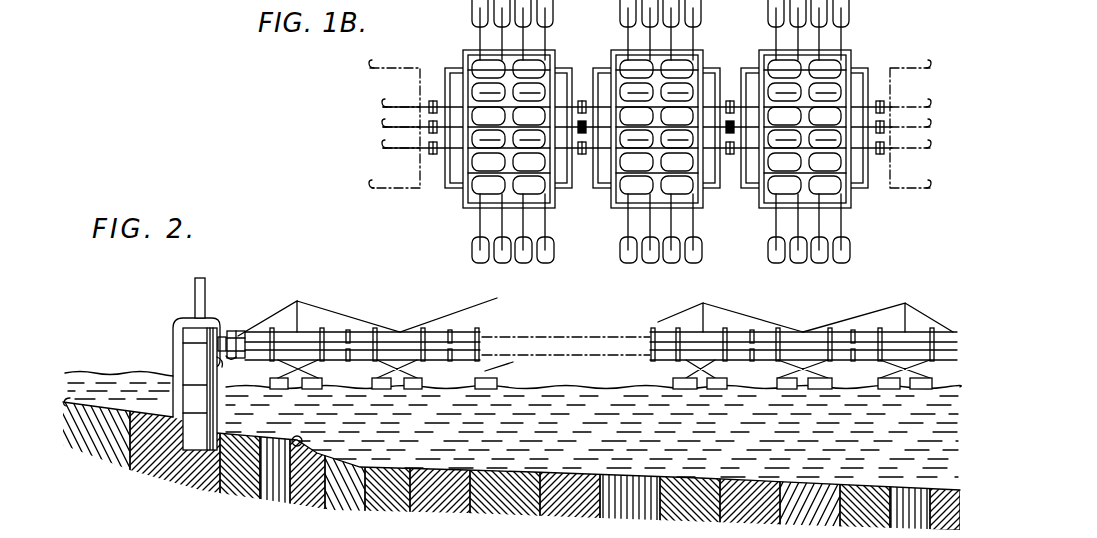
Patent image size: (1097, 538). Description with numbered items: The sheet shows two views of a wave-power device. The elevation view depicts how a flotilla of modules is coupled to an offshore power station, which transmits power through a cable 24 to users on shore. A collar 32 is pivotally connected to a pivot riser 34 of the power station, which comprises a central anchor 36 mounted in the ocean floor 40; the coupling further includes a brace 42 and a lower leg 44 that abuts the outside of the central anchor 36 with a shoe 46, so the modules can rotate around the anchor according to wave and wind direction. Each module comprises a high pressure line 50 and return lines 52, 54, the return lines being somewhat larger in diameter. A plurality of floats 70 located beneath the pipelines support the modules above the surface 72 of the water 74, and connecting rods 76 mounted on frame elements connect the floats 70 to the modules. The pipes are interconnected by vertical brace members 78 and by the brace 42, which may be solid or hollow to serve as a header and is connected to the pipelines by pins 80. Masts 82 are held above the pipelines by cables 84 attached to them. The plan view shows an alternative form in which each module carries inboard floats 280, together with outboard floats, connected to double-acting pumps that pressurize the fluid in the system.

In FIG. 1B, the inboard floats 280 is at (678, 64).
In FIG. 2, the cable 24 is at (113, 432).
In FIG. 2, the collar 32 is at (188, 318).
In FIG. 2, the pivot riser 34 is at (205, 276).
In FIG. 2, the central anchor 36 is at (192, 436).
In FIG. 2, the ocean floor 40 is at (298, 447).
In FIG. 2, the brace 42 is at (243, 343).
In FIG. 2, the lower leg 44 is at (229, 336).
In FIG. 2, the shoe 46 is at (220, 364).
In FIG. 2, the high pressure line 50 is at (530, 356).
In FIG. 2, the return line 52 is at (591, 333).
In FIG. 2, the return line 54 is at (571, 322).
In FIG. 2, the floats 70 is at (416, 392).
In FIG. 2, the surface 72 is at (104, 375).
In FIG. 2, the water 74 is at (122, 393).
In FIG. 2, the connecting rods 76 is at (314, 373).
In FIG. 2, the vertical brace members 78 is at (482, 335).
In FIG. 2, the pins 80 is at (235, 357).
In FIG. 2, the masts 82 is at (706, 324).
In FIG. 2, the cables 84 is at (762, 325).